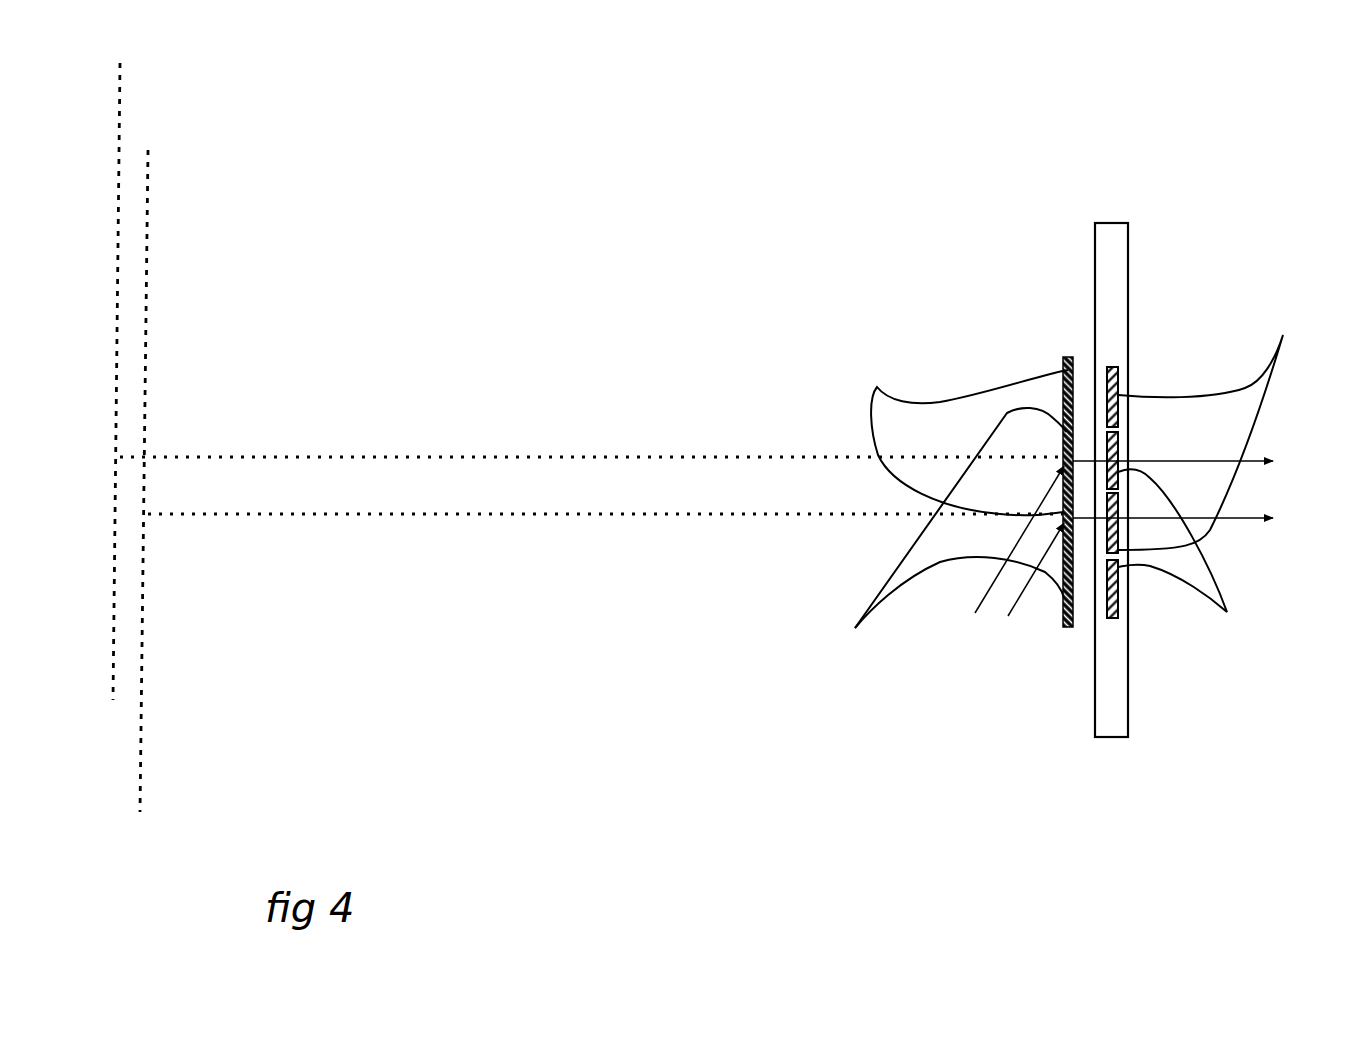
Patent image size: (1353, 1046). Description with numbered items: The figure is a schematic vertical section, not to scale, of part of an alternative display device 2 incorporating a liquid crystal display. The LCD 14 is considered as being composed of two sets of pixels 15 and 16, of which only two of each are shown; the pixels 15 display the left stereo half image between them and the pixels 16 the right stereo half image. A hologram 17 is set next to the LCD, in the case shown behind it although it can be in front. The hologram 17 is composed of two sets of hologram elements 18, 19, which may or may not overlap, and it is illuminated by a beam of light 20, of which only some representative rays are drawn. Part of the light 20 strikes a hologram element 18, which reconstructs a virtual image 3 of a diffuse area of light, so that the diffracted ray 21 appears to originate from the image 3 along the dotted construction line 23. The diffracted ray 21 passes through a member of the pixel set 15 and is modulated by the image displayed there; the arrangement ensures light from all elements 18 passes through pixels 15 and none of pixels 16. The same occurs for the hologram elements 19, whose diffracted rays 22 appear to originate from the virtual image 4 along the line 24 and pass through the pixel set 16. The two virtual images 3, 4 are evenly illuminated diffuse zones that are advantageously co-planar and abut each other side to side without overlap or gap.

The detector assembly 2 is at (1047, 177).
The image of a diffuse area of light 3 is at (113, 680).
The image of a diffuse area of light 4 is at (148, 175).
The LCD 14 is at (1130, 222).
The pixel set 15 is at (1193, 556).
The pixel set 16 is at (1208, 416).
The hologram 17 is at (1068, 340).
The hologram element 18 is at (939, 541).
The hologram element 19 is at (964, 428).
The beam of light 20 is at (985, 600).
The diffracted ray 21 is at (1273, 462).
The diffracted ray 22 is at (1273, 522).
The first axis line 23 is at (592, 457).
The second axis line 24 is at (520, 514).